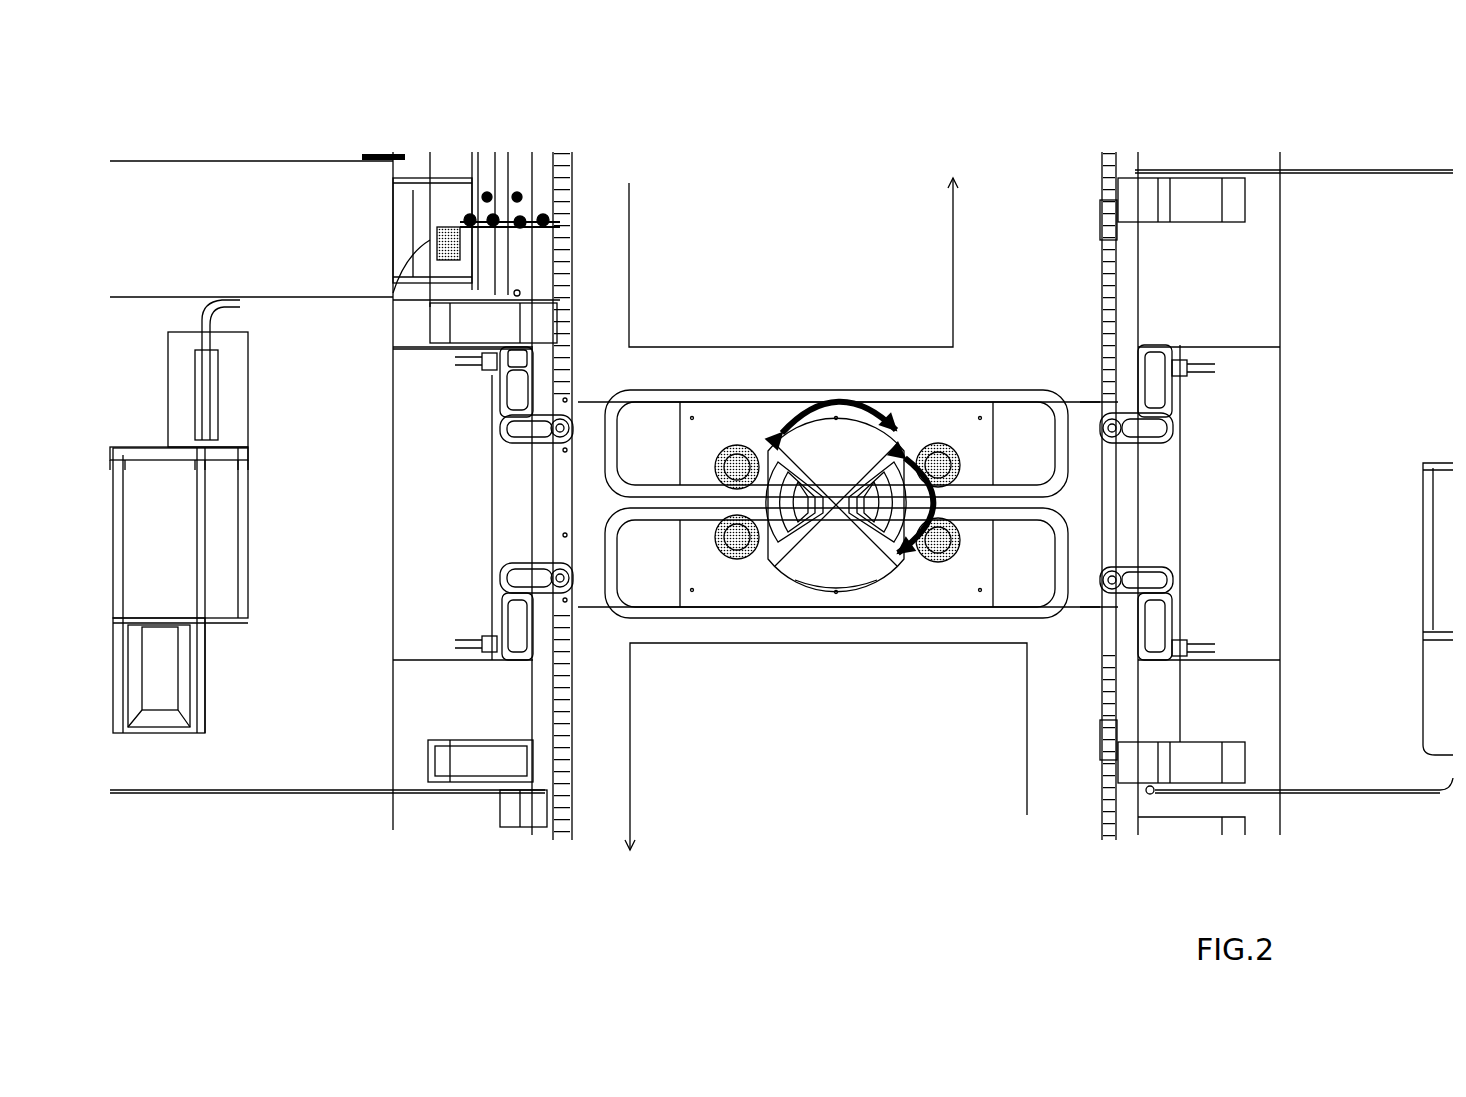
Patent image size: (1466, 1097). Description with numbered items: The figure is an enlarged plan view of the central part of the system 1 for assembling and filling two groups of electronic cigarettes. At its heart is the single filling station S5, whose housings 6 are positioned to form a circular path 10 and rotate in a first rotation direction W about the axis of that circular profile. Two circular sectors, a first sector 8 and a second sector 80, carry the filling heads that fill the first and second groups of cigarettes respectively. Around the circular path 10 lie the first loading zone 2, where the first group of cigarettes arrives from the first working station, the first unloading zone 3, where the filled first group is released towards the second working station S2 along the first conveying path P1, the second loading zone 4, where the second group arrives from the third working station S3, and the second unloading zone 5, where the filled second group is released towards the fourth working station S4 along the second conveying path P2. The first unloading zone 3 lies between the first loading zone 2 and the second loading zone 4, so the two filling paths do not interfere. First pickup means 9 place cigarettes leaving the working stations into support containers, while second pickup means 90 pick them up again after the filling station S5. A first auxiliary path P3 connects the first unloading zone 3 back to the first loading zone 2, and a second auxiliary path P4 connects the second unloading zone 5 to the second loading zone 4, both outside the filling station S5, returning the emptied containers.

The system 1 is at (722, 132).
The first loading zone 2 is at (731, 437).
The first unloading zone 3 is at (943, 432).
The second loading zone 4 is at (953, 573).
The second unloading zone 5 is at (700, 572).
The housings 6 is at (768, 460).
The first sector 8 is at (836, 489).
The second sector 80 is at (839, 487).
The first pickup means 9 is at (493, 415).
The second pickup means 90 is at (517, 597).
The circular path 10 is at (772, 585).
The first rotation direction W is at (918, 516).
The first conveying path P1 is at (791, 262).
The second conveying path P2 is at (828, 746).
The first auxiliary path P3 is at (1012, 385).
The second auxiliary path P4 is at (617, 608).
The second working station S2 is at (1110, 190).
The third working station S3 is at (1112, 760).
The fourth working station S4 is at (493, 757).
The filling station S5 is at (858, 585).